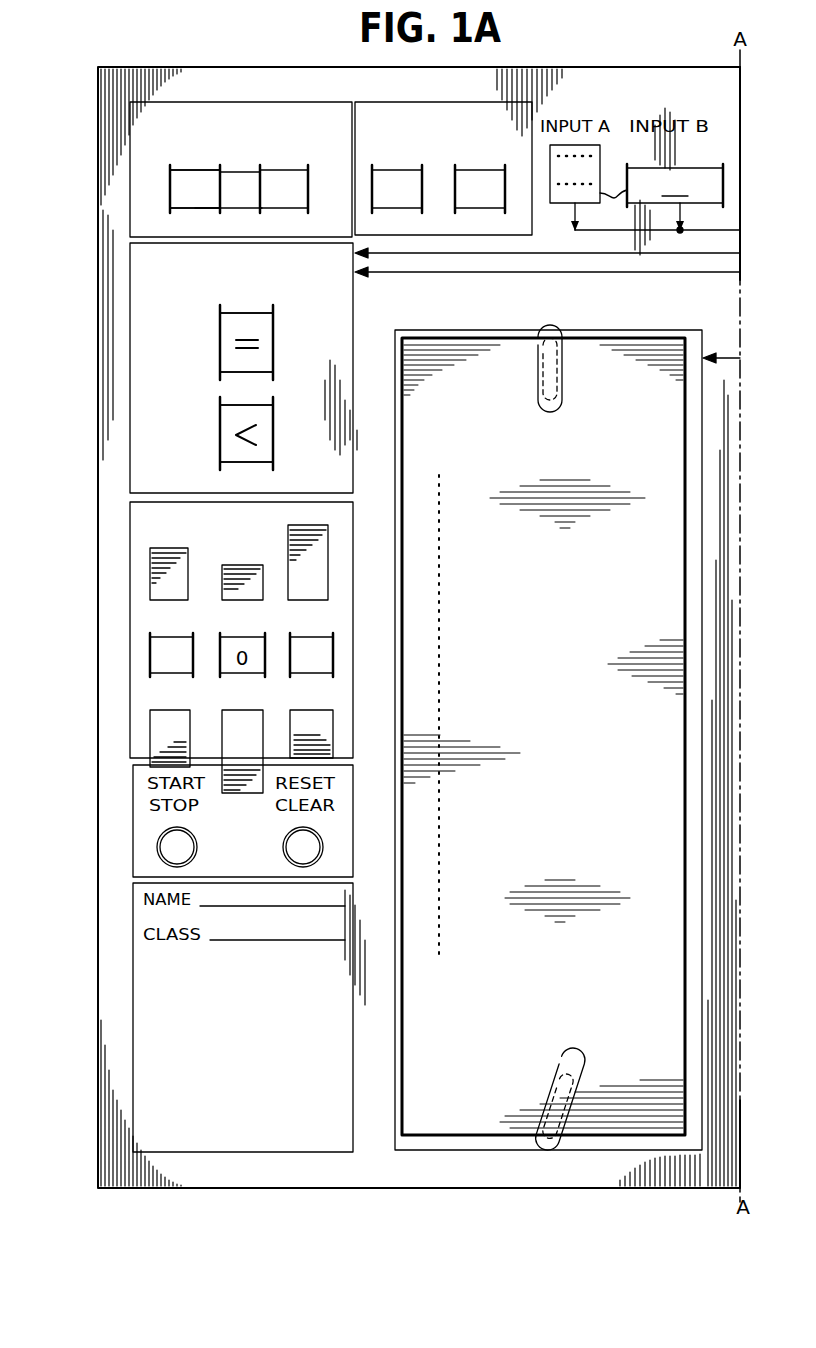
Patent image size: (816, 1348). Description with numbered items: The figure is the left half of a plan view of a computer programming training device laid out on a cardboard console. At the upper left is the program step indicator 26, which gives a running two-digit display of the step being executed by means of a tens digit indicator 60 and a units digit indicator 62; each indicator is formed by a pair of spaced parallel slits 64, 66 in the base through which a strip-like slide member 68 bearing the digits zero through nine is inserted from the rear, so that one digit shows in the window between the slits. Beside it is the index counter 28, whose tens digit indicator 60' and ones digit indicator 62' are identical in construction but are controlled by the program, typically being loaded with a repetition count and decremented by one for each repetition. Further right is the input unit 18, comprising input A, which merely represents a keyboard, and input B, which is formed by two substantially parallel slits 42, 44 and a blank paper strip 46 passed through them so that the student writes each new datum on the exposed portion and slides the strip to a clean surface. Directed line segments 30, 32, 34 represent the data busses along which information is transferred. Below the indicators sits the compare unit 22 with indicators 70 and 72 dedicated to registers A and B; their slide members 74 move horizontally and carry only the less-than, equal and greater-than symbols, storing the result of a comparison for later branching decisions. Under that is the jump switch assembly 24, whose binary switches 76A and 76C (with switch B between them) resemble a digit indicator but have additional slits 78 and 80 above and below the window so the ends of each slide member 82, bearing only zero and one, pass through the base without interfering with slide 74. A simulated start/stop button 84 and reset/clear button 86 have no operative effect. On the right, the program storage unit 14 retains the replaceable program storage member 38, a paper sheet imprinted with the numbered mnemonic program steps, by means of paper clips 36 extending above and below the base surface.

The program storage unit 14 is at (567, 727).
The input unit 18 is at (590, 195).
The compare unit 22 is at (130, 318).
The jump switch assembly 24 is at (135, 622).
The program step indicator 26 is at (145, 152).
The index counter 28 is at (453, 102).
The directed line segment 30 is at (575, 230).
The directed line segment 32 is at (415, 255).
The directed line segment 34 is at (516, 273).
The paper clip 36 is at (565, 398).
The program storage member 38 is at (672, 532).
The slit 42 is at (716, 168).
The slit 44 is at (690, 208).
The strip 46 is at (675, 185).
The tens digit indicator 60 is at (134, 200).
The units digit indicator 62 is at (296, 197).
The tens digit indicator 60' is at (397, 198).
The ones digit indicator 62' is at (480, 198).
The slit 64 is at (222, 173).
The slit 66 is at (212, 206).
The slide member 68 is at (172, 183).
The indicator 70 is at (217, 357).
The indicator 72 is at (217, 452).
The slide member 74 is at (255, 313).
The binary switch 76A is at (147, 662).
The binary switch 76C is at (338, 654).
The slit 78 is at (150, 592).
The slit 80 is at (150, 715).
The slide member 82 is at (150, 558).
The start/stop button 84 is at (186, 845).
The reset/clear button 86 is at (296, 847).